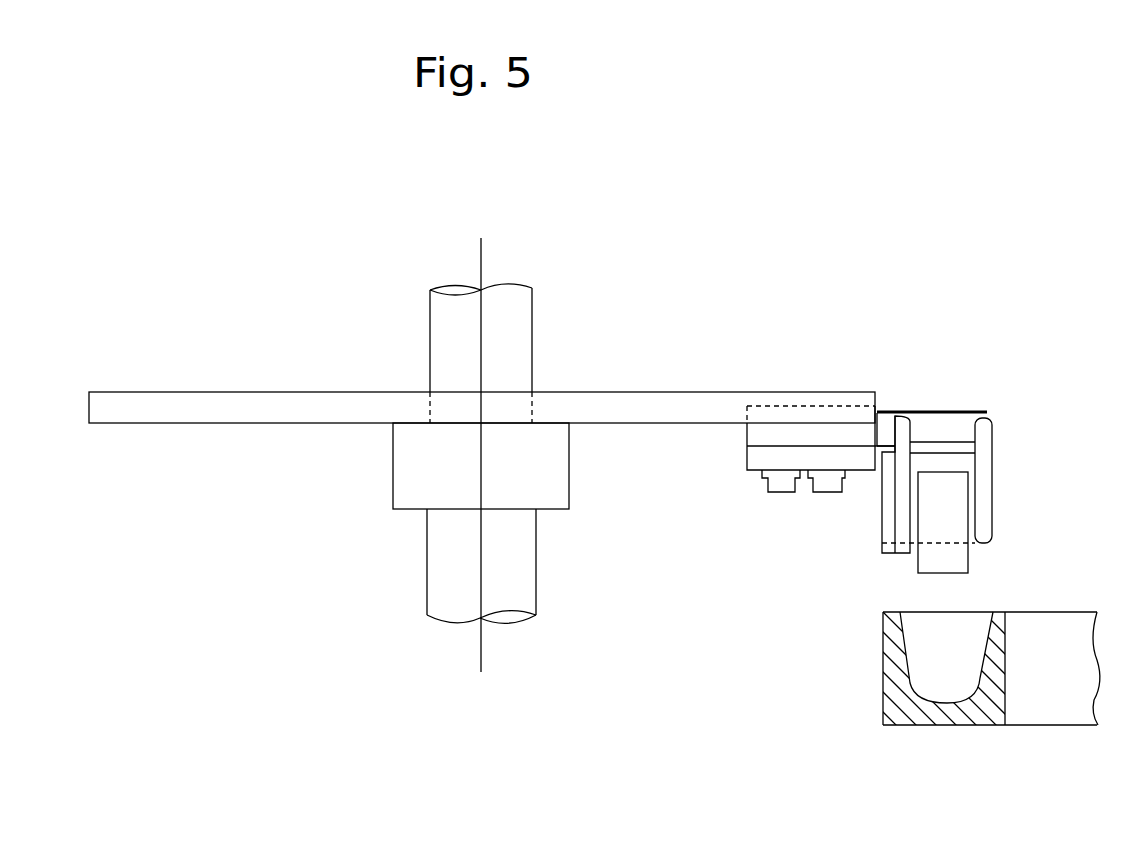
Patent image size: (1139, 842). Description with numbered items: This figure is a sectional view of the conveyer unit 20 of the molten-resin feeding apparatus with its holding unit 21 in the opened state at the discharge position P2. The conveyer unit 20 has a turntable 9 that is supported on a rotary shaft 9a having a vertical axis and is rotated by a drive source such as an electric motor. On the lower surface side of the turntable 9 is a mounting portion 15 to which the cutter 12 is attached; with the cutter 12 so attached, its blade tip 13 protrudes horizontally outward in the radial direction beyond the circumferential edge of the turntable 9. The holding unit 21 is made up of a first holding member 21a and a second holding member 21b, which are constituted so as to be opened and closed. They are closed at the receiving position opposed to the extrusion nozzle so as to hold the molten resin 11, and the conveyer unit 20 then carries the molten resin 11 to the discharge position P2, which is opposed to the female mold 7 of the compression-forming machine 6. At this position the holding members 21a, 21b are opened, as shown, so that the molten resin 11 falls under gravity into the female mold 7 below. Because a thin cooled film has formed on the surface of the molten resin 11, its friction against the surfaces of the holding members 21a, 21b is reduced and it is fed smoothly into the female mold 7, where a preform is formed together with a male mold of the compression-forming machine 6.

The compression-forming machine 6 is at (1032, 600).
The female mold 7 is at (895, 682).
The turntable 9 is at (238, 389).
The rotary shaft 9a is at (522, 335).
The molten resin 11 is at (943, 527).
The cutter 12 is at (912, 411).
The blade tip 13 is at (937, 410).
The mounting portion 15 is at (760, 442).
The conveyer unit 20 is at (739, 304).
The holding unit 21 is at (997, 484).
The first holding member 21a is at (890, 527).
The second holding member 21b is at (985, 445).
The discharge position P2 is at (997, 404).